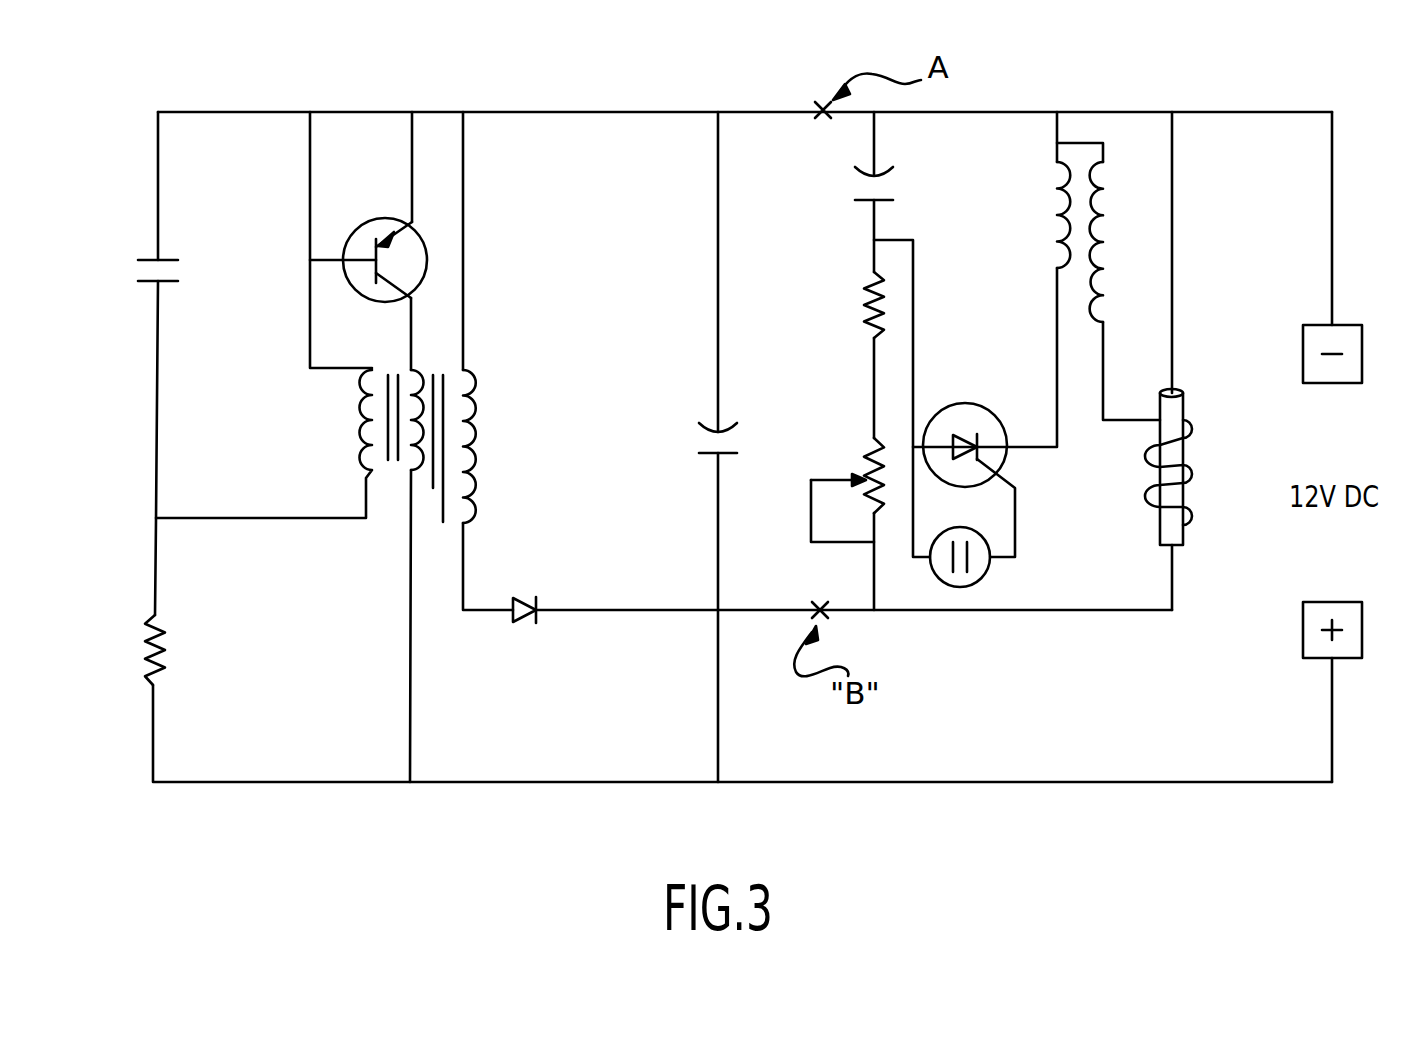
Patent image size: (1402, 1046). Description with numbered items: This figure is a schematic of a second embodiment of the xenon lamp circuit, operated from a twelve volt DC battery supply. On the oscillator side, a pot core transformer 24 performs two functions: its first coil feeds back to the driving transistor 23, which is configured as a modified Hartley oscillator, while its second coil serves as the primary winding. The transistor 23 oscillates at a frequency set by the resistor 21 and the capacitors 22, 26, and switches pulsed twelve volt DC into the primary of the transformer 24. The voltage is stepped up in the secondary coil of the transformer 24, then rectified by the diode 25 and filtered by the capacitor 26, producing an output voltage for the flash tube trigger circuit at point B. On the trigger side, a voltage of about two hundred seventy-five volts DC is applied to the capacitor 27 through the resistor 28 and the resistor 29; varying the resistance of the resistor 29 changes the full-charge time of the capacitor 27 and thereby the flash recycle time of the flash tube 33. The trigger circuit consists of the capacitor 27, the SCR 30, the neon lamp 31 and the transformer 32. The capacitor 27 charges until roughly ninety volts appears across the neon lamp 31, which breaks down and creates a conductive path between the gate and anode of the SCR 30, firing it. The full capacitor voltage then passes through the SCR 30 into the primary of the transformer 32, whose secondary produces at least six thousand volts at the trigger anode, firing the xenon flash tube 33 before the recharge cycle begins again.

The resistor 21 is at (135, 650).
The capacitor 22 is at (171, 296).
The driving transistor 23 is at (368, 243).
The pot core transformer 24 is at (340, 437).
The diode 25 is at (523, 587).
The capacitor 26 is at (730, 462).
The capacitor 27 is at (902, 192).
The resistor 28 is at (854, 297).
The resistor 29 is at (847, 483).
The SCR 30 is at (974, 455).
The neon lamp 31 is at (988, 565).
The transformer 32 is at (1103, 242).
The flash tube 33 is at (1196, 467).